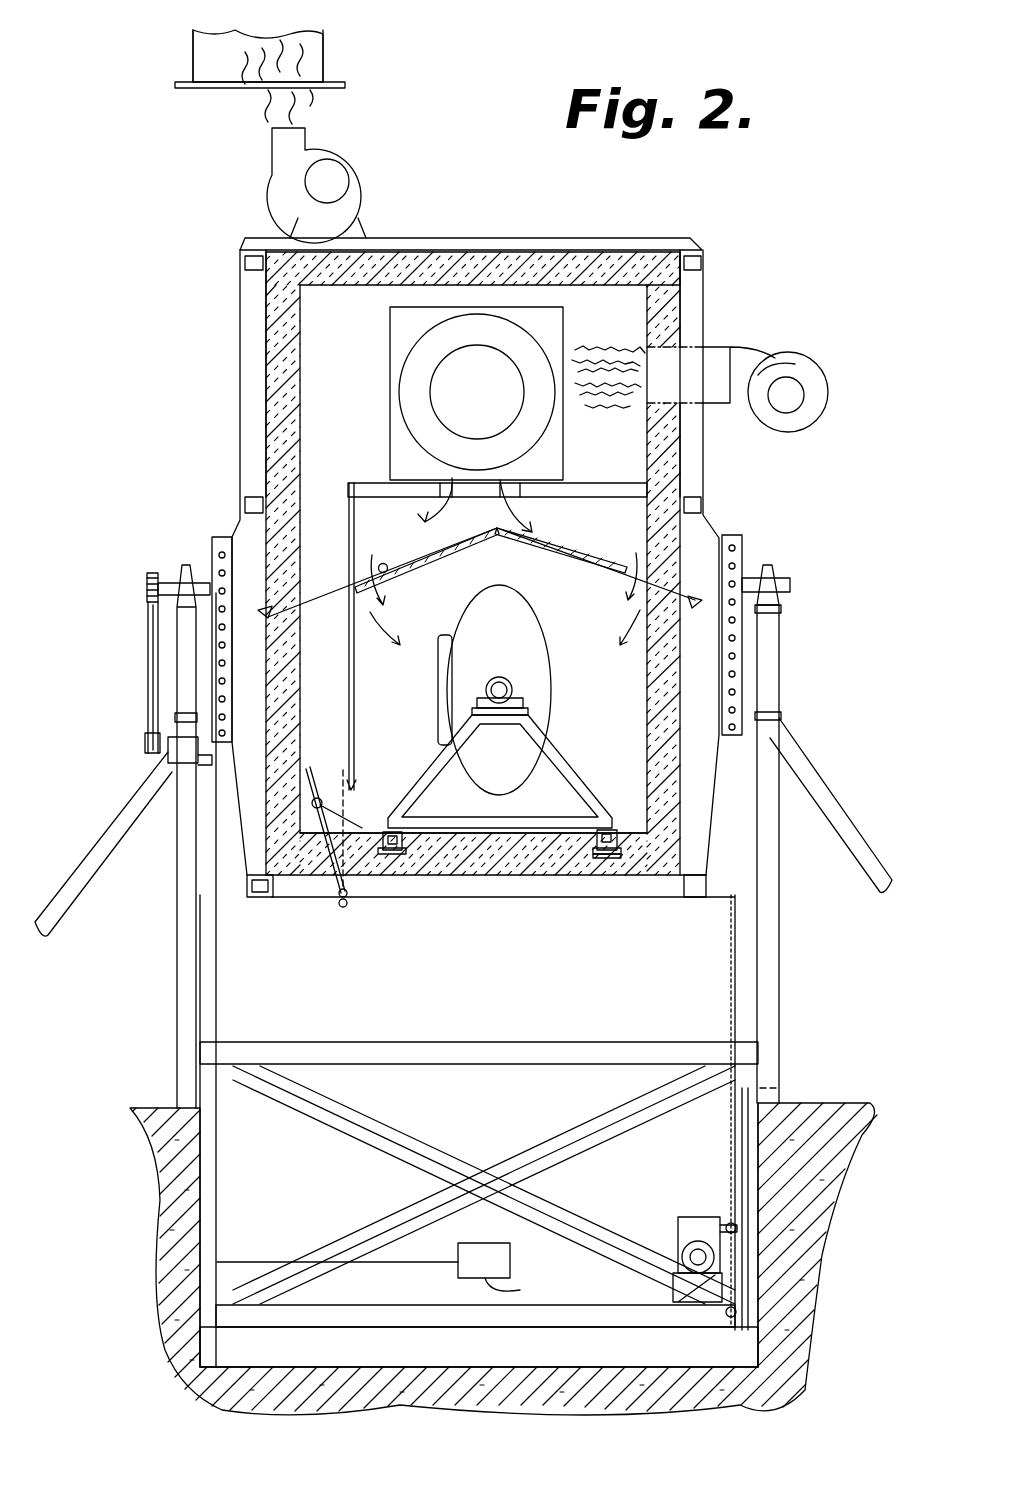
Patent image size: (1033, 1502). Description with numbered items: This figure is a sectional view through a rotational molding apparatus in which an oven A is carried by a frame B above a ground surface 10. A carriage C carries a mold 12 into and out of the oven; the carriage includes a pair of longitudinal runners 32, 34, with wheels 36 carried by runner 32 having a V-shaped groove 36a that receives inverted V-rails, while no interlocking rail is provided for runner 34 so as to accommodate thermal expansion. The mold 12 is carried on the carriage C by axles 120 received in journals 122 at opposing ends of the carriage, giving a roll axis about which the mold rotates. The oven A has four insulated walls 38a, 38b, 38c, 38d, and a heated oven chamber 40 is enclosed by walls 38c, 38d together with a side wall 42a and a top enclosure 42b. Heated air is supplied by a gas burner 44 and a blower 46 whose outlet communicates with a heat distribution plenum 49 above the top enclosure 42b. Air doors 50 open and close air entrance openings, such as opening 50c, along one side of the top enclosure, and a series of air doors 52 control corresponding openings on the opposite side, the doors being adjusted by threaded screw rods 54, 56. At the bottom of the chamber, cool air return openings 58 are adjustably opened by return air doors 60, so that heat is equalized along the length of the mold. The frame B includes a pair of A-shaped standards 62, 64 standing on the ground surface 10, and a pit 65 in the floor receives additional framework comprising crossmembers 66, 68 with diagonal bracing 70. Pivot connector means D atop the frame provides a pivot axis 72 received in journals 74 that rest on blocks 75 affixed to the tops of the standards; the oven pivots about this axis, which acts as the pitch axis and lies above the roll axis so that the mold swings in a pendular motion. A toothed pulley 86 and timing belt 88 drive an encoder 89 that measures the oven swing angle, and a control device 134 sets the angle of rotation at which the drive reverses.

The oven A is at (703, 262).
The frame B is at (776, 945).
The carriage C is at (425, 765).
The pivot connector means D is at (152, 648).
The ground surface 10 is at (826, 1103).
The mold 12 is at (520, 623).
The runner 32 is at (612, 830).
The runner 34 is at (388, 832).
The wheels 36 is at (590, 876).
The V-shaped groove 36a is at (608, 858).
The insulated wall 38a is at (275, 325).
The insulated wall 38b is at (430, 250).
The insulated wall 38c is at (668, 315).
The insulated wall 38d is at (343, 870).
The heated oven chamber 40 is at (513, 569).
The side wall 42a is at (349, 660).
The top enclosure 42b is at (450, 543).
The gas burner 44 is at (806, 358).
The blower 46 is at (390, 364).
The heat distribution plenum 49 is at (558, 512).
The air doors 50 is at (400, 575).
The air entrance opening 50c is at (372, 585).
The air doors 52 is at (600, 558).
The threaded screw rod 54 is at (262, 612).
The threaded screw rod 56 is at (694, 600).
The cool air return openings 58 is at (322, 858).
The return air doors 60 is at (310, 805).
The A-shaped standard 62 is at (176, 950).
The A-shaped standard 64 is at (778, 980).
The pit 65 is at (468, 1355).
The crossmember 66 is at (440, 1042).
The crossmember 68 is at (338, 1315).
The diagonal bracing 70 is at (438, 1215).
The pivot axis 72 is at (198, 537).
The journals 74 is at (180, 580).
The blocks 75 is at (172, 722).
The toothed pulley 86 is at (148, 583).
The timing belt 88 is at (148, 684).
The encoder 89 is at (170, 762).
The axles 120 is at (507, 684).
The journals 122 is at (525, 706).
The control device 134 is at (512, 1283).